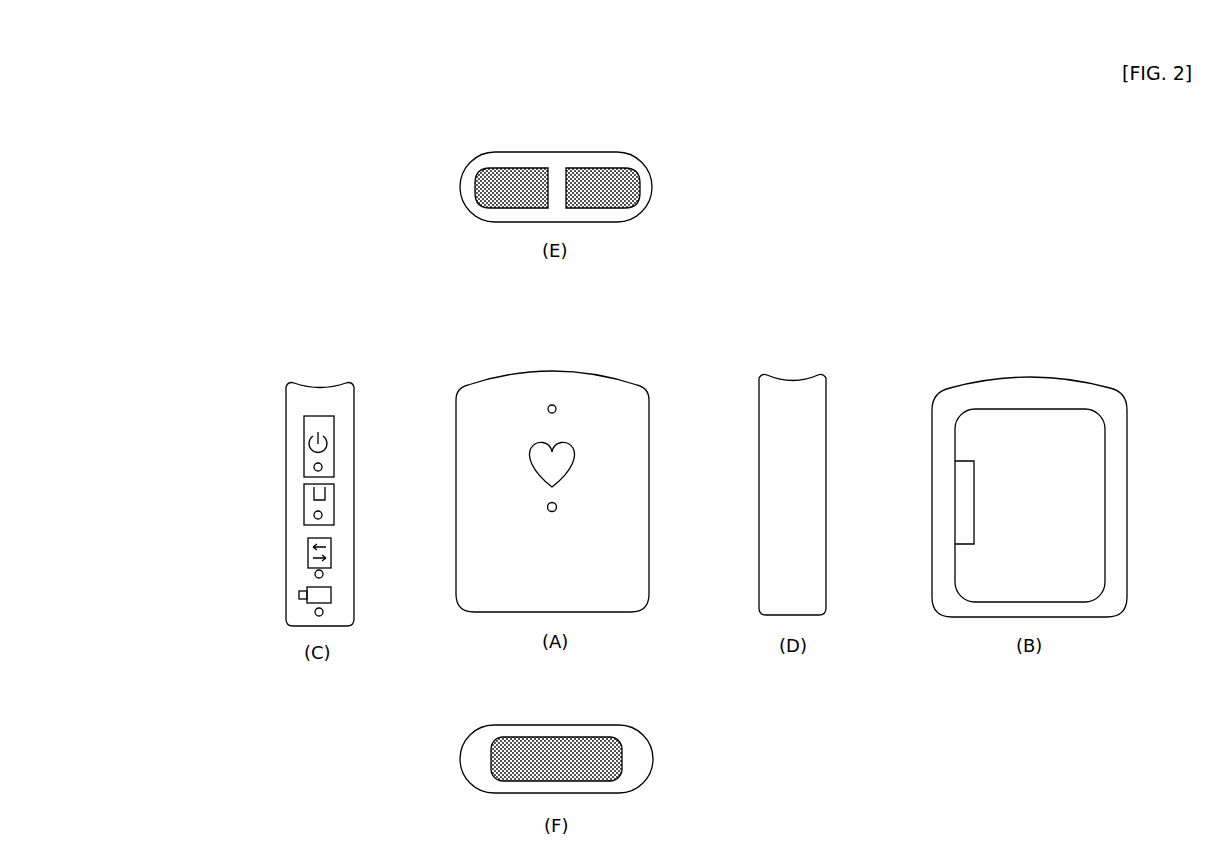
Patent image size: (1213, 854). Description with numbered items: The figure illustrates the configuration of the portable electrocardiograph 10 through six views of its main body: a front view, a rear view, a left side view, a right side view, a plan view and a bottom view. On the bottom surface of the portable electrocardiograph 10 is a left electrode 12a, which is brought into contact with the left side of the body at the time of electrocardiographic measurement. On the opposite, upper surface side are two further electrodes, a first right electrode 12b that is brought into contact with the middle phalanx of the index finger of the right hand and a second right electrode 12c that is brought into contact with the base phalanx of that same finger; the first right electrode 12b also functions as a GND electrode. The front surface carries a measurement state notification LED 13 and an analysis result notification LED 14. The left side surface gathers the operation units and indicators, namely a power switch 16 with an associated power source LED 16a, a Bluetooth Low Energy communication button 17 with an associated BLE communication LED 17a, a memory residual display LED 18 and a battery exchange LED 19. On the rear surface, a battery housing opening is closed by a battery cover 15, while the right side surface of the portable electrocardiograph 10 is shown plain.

The portable electrocardiograph 10 is at (1020, 203).
The left electrode 12a is at (623, 759).
The first right electrode 12b is at (505, 176).
The second right electrode 12c is at (610, 176).
The measurement state notification LED 13 is at (549, 405).
The analysis result notification LED 14 is at (555, 503).
The battery cover 15 is at (985, 604).
The power switch 16 is at (303, 429).
The power source LED 16a is at (313, 467).
The BLE communication button 17 is at (303, 503).
The BLE communication LED 17a is at (313, 515).
The memory residual display LED 18 is at (314, 575).
The battery exchange LED 19 is at (314, 612).